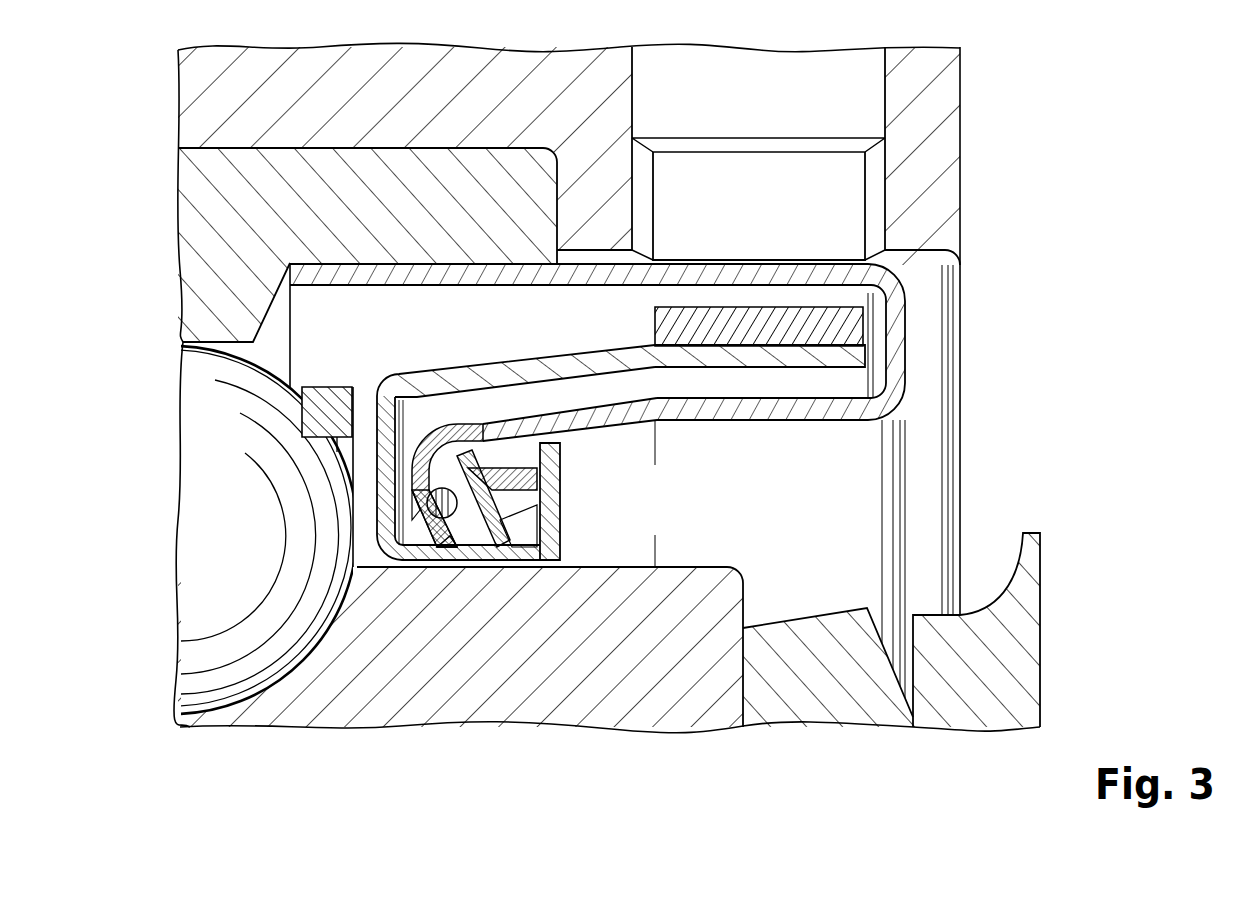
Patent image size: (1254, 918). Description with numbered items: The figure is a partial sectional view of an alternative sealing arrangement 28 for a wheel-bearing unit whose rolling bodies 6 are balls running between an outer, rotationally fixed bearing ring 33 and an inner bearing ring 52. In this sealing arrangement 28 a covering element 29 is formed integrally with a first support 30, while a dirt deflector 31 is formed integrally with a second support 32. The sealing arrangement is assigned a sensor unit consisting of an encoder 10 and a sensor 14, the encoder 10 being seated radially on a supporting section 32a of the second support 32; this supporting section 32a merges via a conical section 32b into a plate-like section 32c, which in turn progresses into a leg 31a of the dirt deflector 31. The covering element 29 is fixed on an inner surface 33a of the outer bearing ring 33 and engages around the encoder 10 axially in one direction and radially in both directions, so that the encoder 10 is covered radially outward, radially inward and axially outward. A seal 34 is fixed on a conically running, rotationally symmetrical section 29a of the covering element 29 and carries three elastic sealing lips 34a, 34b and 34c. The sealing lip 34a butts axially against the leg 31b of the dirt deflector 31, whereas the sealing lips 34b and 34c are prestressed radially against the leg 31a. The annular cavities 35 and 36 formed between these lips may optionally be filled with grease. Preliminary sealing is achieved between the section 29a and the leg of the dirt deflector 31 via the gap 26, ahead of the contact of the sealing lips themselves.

The rolling bodies 6 is at (205, 512).
The encoder 10 is at (837, 330).
The sensor 14 is at (757, 172).
The gap 26 is at (550, 443).
The sealing arrangement 28 is at (790, 507).
The covering element 29 is at (897, 308).
The conically running rotationally symmetrical section 29a is at (578, 408).
The first support 30 is at (690, 342).
The dirt deflector 31 is at (560, 482).
The leg 31a is at (435, 555).
The leg 31b is at (625, 501).
The second support 32 is at (428, 372).
The supporting section 32a is at (837, 360).
The conical section 32b is at (498, 363).
The plate-like section 32c is at (373, 430).
The outer bearing ring 33 is at (203, 230).
The inner surface 33a is at (280, 297).
The seal 34 is at (405, 560).
The sealing lip 34a is at (560, 508).
The sealing lip 34b is at (462, 553).
The sealing lip 34c is at (470, 555).
The annular cavity 35 is at (497, 560).
The annular cavity 36 is at (520, 548).
The inner bearing ring 52 is at (547, 697).